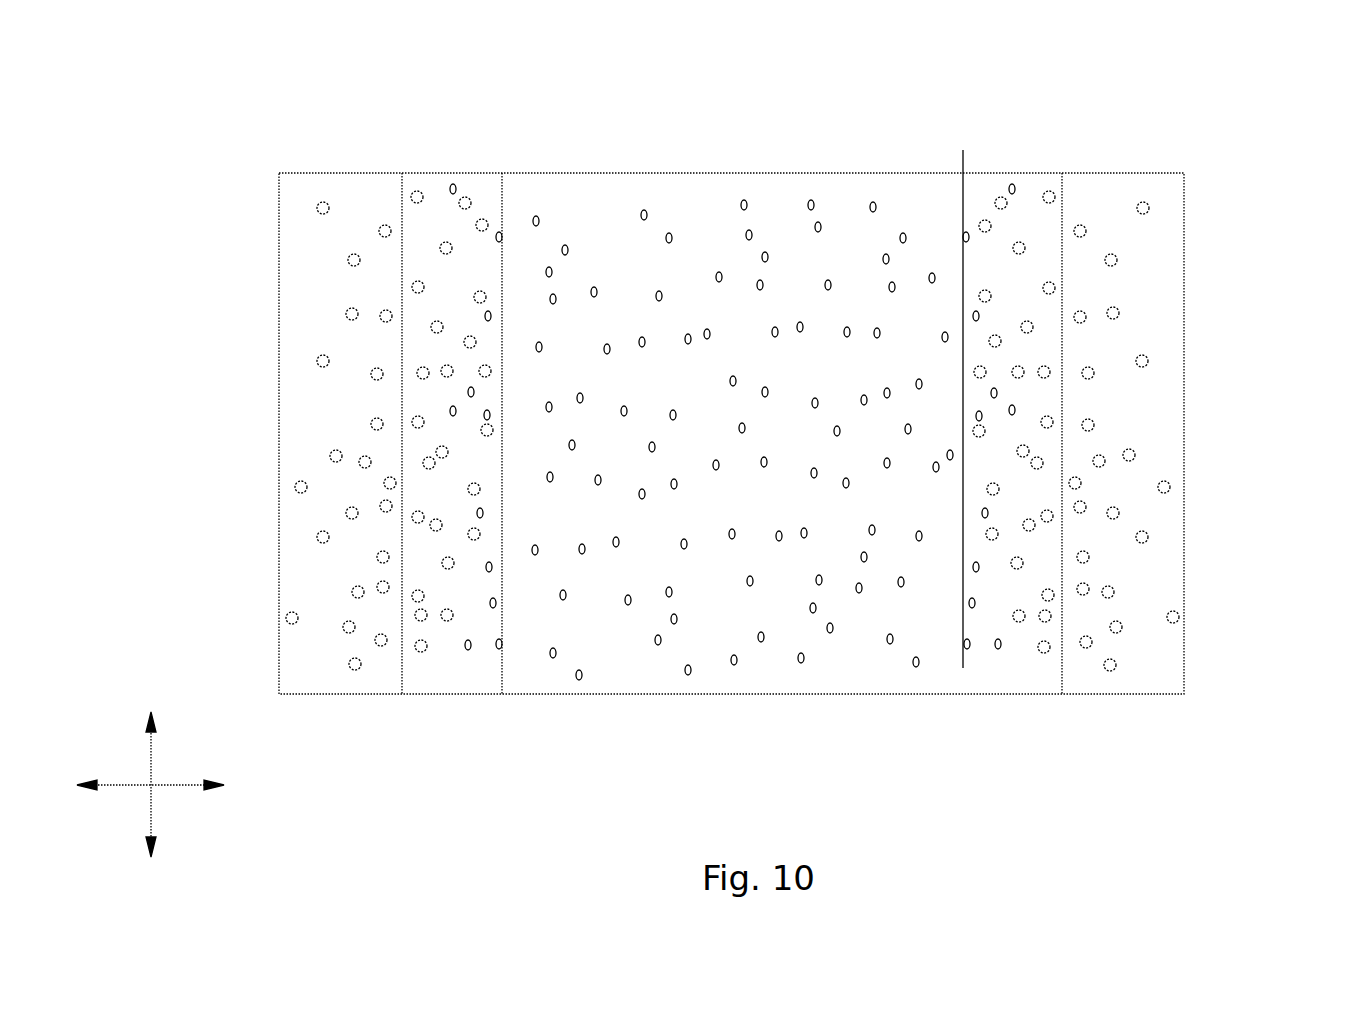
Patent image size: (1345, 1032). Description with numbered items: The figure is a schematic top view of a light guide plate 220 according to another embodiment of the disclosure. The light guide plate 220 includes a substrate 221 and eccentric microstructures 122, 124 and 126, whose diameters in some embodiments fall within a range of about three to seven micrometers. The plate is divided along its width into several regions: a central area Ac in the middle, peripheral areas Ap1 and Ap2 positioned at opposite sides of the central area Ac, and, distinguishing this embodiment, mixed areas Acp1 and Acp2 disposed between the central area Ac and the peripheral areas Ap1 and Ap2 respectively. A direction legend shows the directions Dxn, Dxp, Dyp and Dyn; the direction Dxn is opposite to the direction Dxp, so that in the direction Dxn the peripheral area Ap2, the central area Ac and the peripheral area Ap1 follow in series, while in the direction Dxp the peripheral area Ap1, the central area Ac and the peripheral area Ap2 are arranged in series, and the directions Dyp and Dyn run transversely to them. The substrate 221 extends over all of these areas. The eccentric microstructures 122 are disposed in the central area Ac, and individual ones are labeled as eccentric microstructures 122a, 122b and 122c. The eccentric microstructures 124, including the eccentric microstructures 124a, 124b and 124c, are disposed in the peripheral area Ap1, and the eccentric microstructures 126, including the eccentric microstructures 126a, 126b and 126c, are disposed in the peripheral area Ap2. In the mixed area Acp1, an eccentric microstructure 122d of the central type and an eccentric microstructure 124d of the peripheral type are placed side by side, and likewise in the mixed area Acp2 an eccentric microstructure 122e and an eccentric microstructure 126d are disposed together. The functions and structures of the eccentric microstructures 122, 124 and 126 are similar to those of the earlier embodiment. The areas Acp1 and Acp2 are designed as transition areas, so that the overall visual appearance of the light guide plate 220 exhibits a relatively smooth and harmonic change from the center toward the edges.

The light guide plate 220 is at (1293, 70).
The substrate 221 is at (279, 200).
The eccentric microstructures 122 is at (1036, 122).
The eccentric microstructure 122a is at (744, 198).
The eccentric microstructure 122b is at (811, 198).
The eccentric microstructure 122c is at (873, 201).
The eccentric microstructure 122d is at (502, 228).
The eccentric microstructure 122e is at (1012, 183).
The eccentric microstructures 124 is at (212, 362).
The eccentric microstructure 124a is at (317, 363).
The eccentric microstructure 124b is at (371, 424).
The eccentric microstructure 124c is at (383, 552).
The eccentric microstructure 124d is at (425, 462).
The eccentric microstructures 126 is at (1252, 358).
The eccentric microstructure 126a is at (1148, 358).
The eccentric microstructure 126b is at (1093, 423).
The eccentric microstructure 126c is at (1147, 536).
The eccentric microstructure 126d is at (1042, 462).
The peripheral area Ap1 is at (376, 682).
The area Acp1 is at (478, 682).
The central area Ac is at (603, 682).
The area Acp2 is at (1003, 682).
The peripheral area Ap2 is at (1106, 682).
The direction Dyp is at (148, 695).
The direction Dyn is at (148, 875).
The direction Dxn is at (46, 786).
The direction Dxp is at (253, 786).